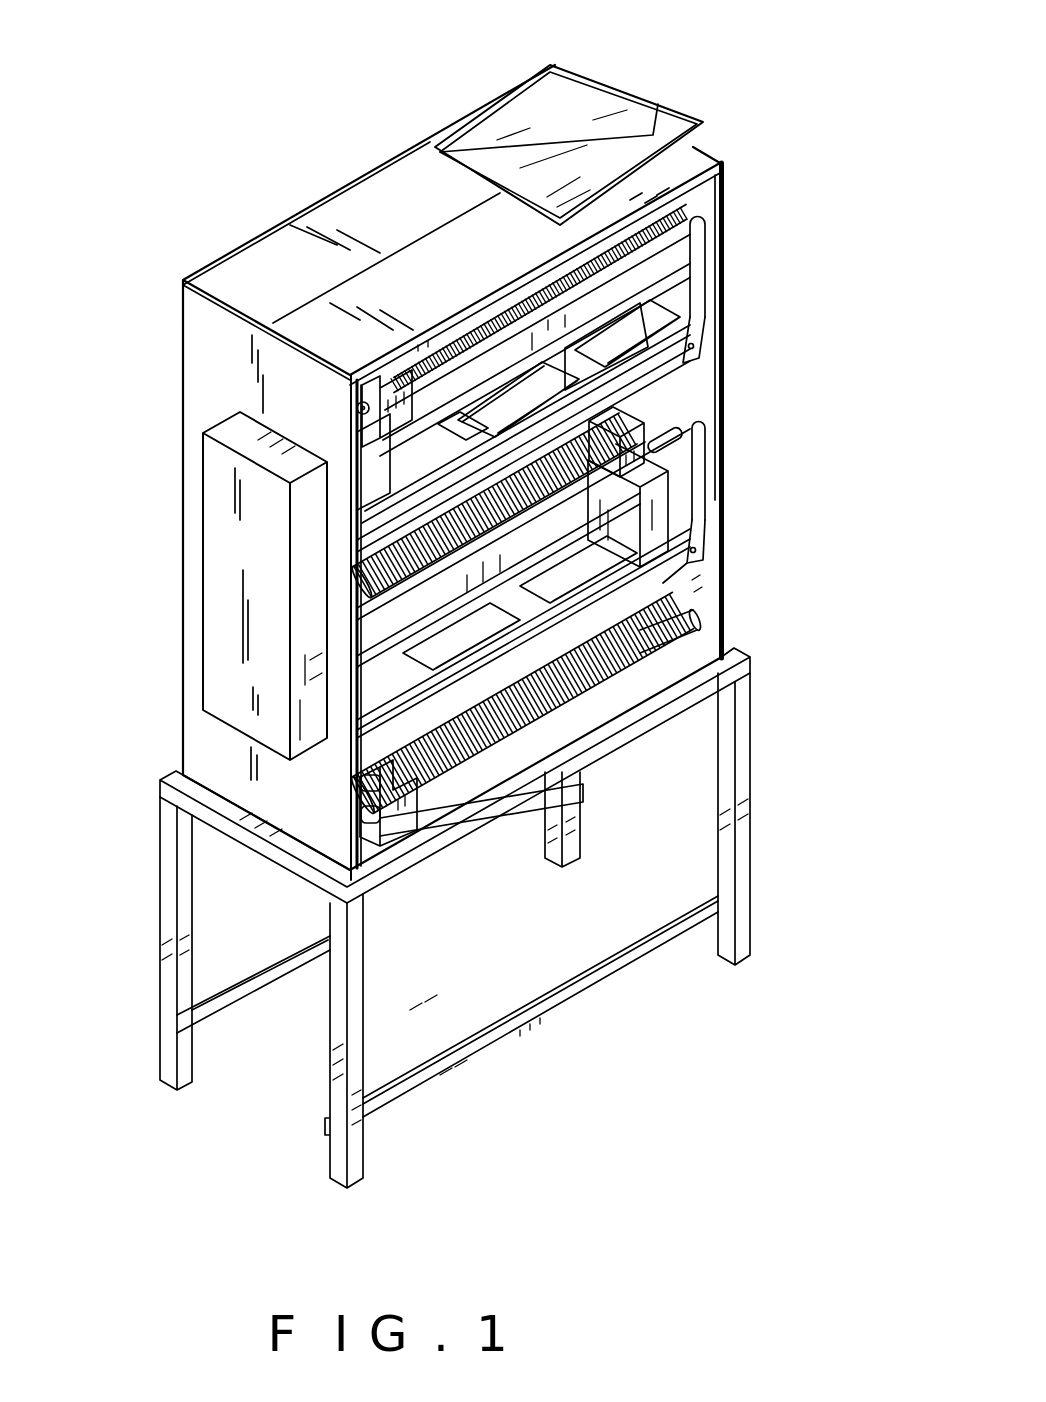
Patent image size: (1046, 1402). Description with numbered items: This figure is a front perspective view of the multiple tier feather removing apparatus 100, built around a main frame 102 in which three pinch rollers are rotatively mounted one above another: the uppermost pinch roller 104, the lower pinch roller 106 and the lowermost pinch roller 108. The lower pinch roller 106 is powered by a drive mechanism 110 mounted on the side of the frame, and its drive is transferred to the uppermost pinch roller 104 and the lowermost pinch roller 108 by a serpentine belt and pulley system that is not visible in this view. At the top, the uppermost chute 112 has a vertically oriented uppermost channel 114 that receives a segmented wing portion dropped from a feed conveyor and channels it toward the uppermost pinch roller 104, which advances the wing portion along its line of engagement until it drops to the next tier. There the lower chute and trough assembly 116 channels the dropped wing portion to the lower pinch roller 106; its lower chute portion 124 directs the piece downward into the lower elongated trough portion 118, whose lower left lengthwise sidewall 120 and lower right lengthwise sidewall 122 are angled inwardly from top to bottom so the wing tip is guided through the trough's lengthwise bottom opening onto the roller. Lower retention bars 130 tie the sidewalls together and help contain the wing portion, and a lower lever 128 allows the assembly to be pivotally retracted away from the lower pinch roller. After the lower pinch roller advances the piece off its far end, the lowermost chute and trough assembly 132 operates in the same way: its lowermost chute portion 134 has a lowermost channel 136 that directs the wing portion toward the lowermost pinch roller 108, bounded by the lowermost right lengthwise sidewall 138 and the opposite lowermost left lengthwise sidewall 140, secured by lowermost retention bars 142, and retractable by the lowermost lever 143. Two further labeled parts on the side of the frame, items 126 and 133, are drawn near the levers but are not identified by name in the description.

The feather removing apparatus 100 is at (862, 233).
The main frame 102 is at (208, 248).
The uppermost pinch roller 104 is at (690, 204).
The lower pinch roller 106 is at (662, 434).
The lowermost pinch roller 108 is at (700, 613).
The drive mechanism 110 is at (244, 592).
The uppermost chute 112 is at (626, 90).
The uppermost channel 114 is at (652, 128).
The lower chute and trough assembly 116 is at (376, 539).
The lower elongated trough portion 118 is at (688, 361).
The lower left lengthwise sidewall 120 is at (628, 325).
The lower right lengthwise sidewall 122 is at (662, 377).
The lower chute portion 124 is at (377, 471).
The left bearing block 126 is at (359, 412).
The lower lever 128 is at (703, 270).
The lower retention bars 130 is at (556, 364).
The lowermost chute and trough assembly 132 is at (378, 736).
The lower bracket mount 133 is at (707, 570).
The lowermost chute portion 134 is at (672, 507).
The lowermost channel 136 is at (678, 448).
The lowermost right lengthwise sidewall 138 is at (690, 582).
The lower tray 140 is at (388, 681).
The lowermost retention bars 142 is at (452, 657).
The lowermost lever 143 is at (703, 467).